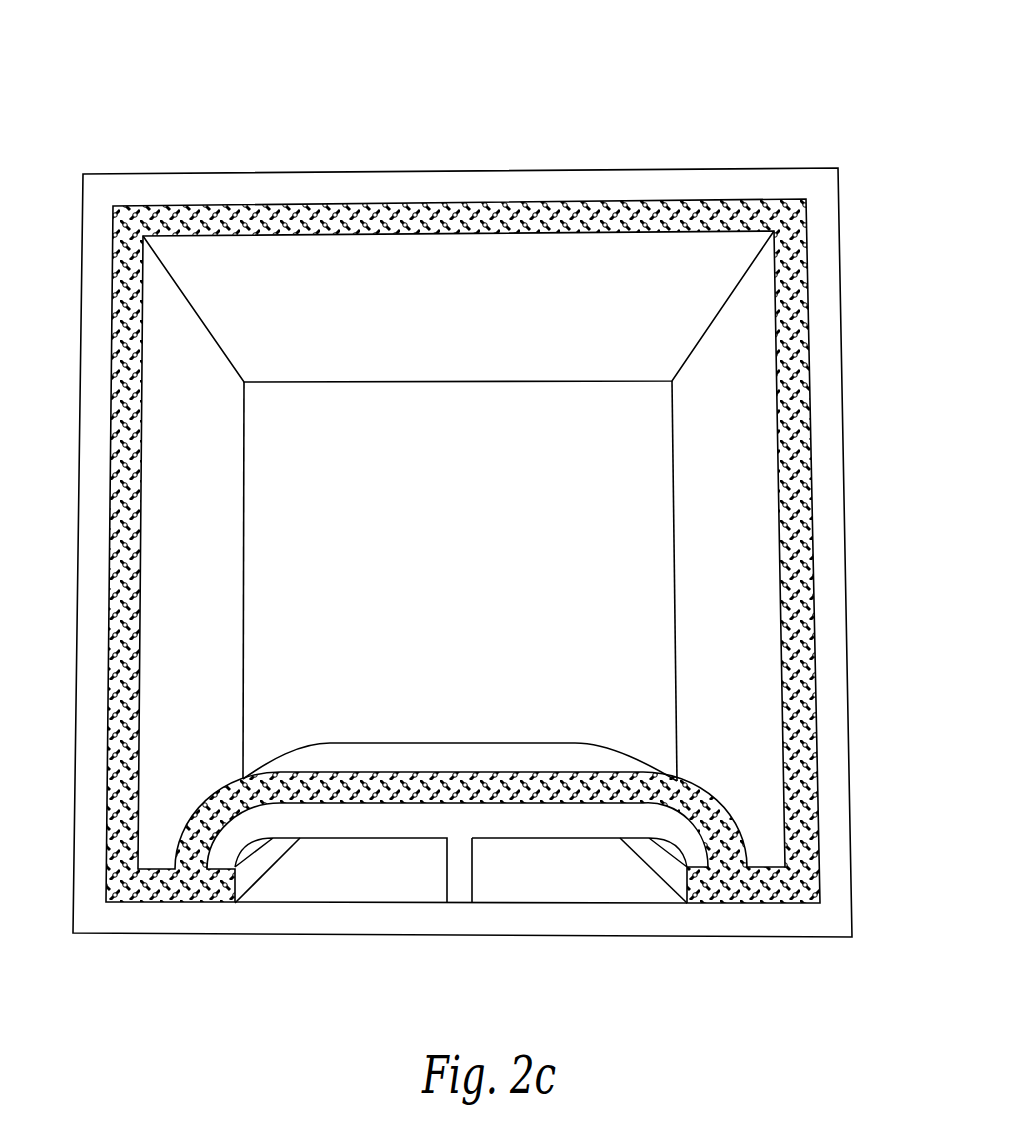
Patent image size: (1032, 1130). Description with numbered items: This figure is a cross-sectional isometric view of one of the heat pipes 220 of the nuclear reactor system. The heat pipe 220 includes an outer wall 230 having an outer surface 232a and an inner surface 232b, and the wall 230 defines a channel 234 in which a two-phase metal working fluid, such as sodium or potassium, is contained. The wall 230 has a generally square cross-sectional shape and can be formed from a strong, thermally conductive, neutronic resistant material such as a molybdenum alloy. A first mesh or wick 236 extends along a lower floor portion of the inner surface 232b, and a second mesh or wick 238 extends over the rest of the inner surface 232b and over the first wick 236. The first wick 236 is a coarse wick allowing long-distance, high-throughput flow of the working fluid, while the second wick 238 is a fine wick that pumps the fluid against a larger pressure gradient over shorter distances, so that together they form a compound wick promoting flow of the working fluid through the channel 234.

The heat pipe 220 is at (115, 82).
The outer wall 230 is at (847, 623).
The outer surface 232a is at (845, 517).
The inner surface 232b is at (806, 445).
The channel 234 is at (358, 405).
The first wick 236 is at (463, 843).
The second wick 238 is at (123, 633).